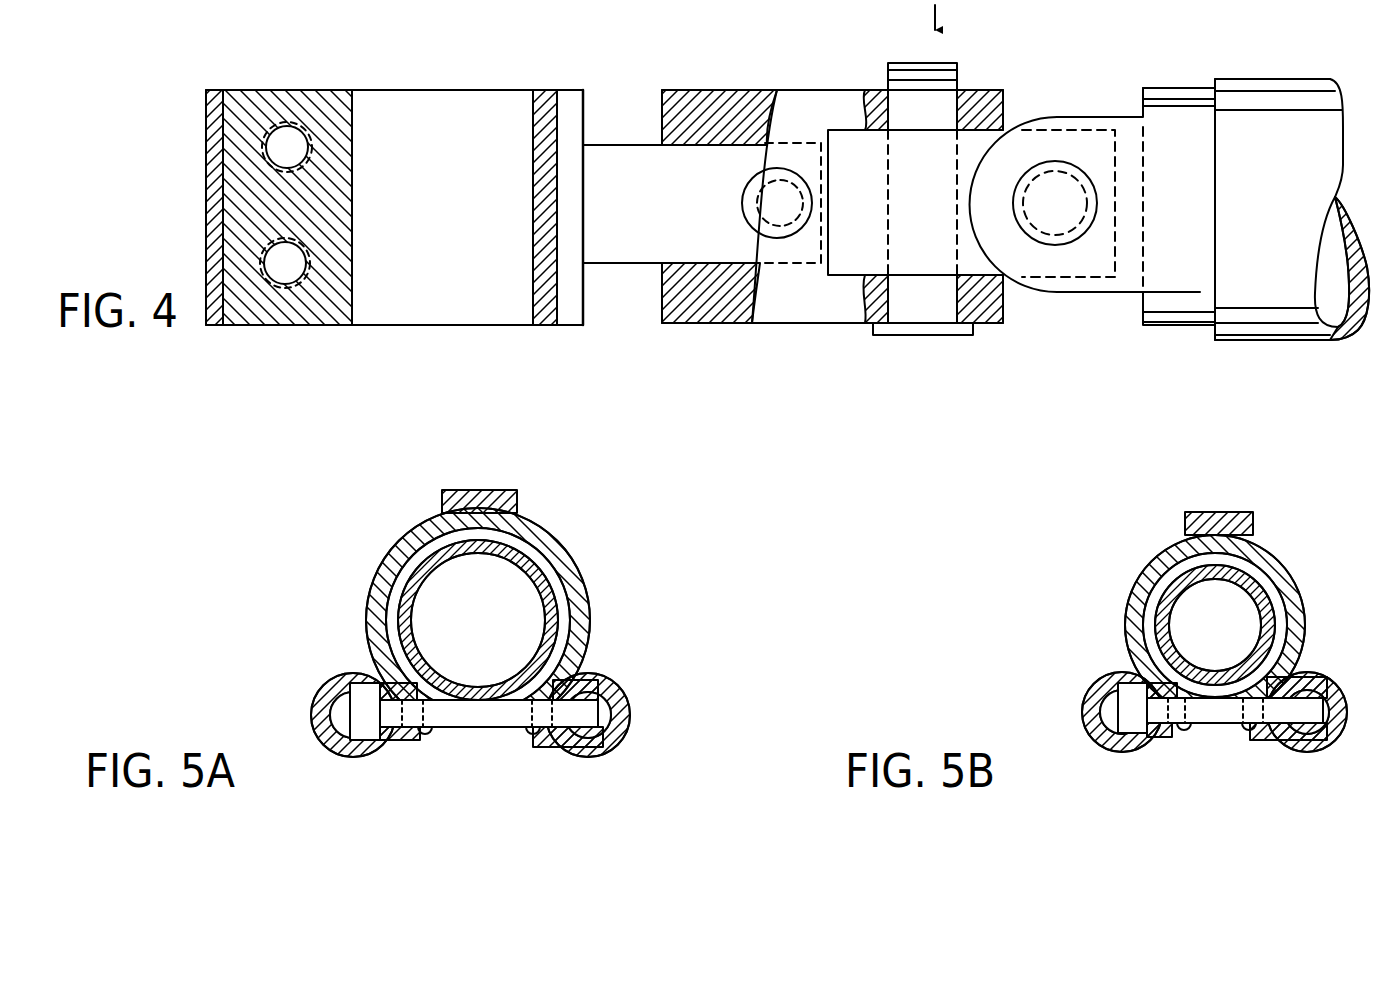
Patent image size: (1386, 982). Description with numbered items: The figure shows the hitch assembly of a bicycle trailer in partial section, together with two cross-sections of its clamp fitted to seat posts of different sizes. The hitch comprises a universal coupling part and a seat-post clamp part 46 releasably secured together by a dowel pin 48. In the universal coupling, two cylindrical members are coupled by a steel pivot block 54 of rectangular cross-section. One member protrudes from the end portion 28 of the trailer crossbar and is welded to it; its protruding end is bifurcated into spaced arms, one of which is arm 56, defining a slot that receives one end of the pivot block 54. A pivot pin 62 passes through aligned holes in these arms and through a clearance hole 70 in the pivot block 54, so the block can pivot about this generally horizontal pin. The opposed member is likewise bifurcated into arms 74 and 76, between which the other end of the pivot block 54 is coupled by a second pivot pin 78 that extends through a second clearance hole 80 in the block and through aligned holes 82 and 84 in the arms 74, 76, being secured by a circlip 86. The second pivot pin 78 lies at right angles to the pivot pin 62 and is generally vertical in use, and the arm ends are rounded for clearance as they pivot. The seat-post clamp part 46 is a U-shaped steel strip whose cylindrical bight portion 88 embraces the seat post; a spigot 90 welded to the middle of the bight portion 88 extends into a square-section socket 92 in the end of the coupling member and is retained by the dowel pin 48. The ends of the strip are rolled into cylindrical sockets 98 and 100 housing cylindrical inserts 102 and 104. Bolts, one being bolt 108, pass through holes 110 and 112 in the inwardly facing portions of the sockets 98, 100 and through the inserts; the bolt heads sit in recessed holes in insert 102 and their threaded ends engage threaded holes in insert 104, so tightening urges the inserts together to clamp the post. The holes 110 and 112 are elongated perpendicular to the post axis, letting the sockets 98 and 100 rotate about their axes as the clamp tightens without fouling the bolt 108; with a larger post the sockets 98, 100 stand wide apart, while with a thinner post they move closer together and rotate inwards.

In FIG. 4, the end portion 28 is at (1282, 79).
In FIG. 4, the seat-post clamp part 46 is at (452, 70).
In FIG. 4, the dowel pin 48 is at (757, 195).
In FIG. 4, the pivot block 54 is at (972, 260).
In FIG. 4, the arm 56 is at (1045, 293).
In FIG. 4, the pivot pin 62 is at (1062, 210).
In FIG. 4, the clearance hole 70 is at (1047, 187).
In FIG. 4, the arm 74 is at (993, 325).
In FIG. 4, the arm 76 is at (998, 90).
In FIG. 4, the second pivot pin 78 is at (940, 70).
In FIG. 4, the second clearance hole 80 is at (887, 233).
In FIG. 4, the hole 82 is at (893, 312).
In FIG. 4, the hole 84 is at (907, 107).
In FIG. 4, the circlip 86 is at (965, 90).
In FIG. 4, the cylindrical bight portion 88 is at (567, 100).
In FIG. 5A, the cylindrical bight portion 88 is at (572, 560).
In FIG. 5B, the cylindrical bight portion 88 is at (1303, 597).
In FIG. 4, the spigot 90 is at (621, 245).
In FIG. 5A, the spigot 90 is at (517, 497).
In FIG. 5B, the spigot 90 is at (1255, 523).
In FIG. 4, the socket 92 is at (652, 158).
In FIG. 5A, the cylindrical socket 98 is at (322, 712).
In FIG. 5B, the cylindrical socket 98 is at (1090, 723).
In FIG. 5A, the cylindrical socket 100 is at (623, 737).
In FIG. 5B, the cylindrical socket 100 is at (1328, 733).
In FIG. 5A, the cylindrical insert 102 is at (380, 681).
In FIG. 5B, the cylindrical insert 102 is at (1143, 680).
In FIG. 4, the cylindrical insert 104 is at (318, 107).
In FIG. 5A, the cylindrical insert 104 is at (600, 678).
In FIG. 5B, the cylindrical insert 104 is at (1323, 680).
In FIG. 5A, the bolt 108 is at (453, 717).
In FIG. 5B, the bolt 108 is at (1220, 717).
In FIG. 5A, the hole 110 is at (533, 733).
In FIG. 5B, the hole 110 is at (1243, 730).
In FIG. 5A, the hole 112 is at (425, 735).
In FIG. 5B, the hole 112 is at (1183, 730).